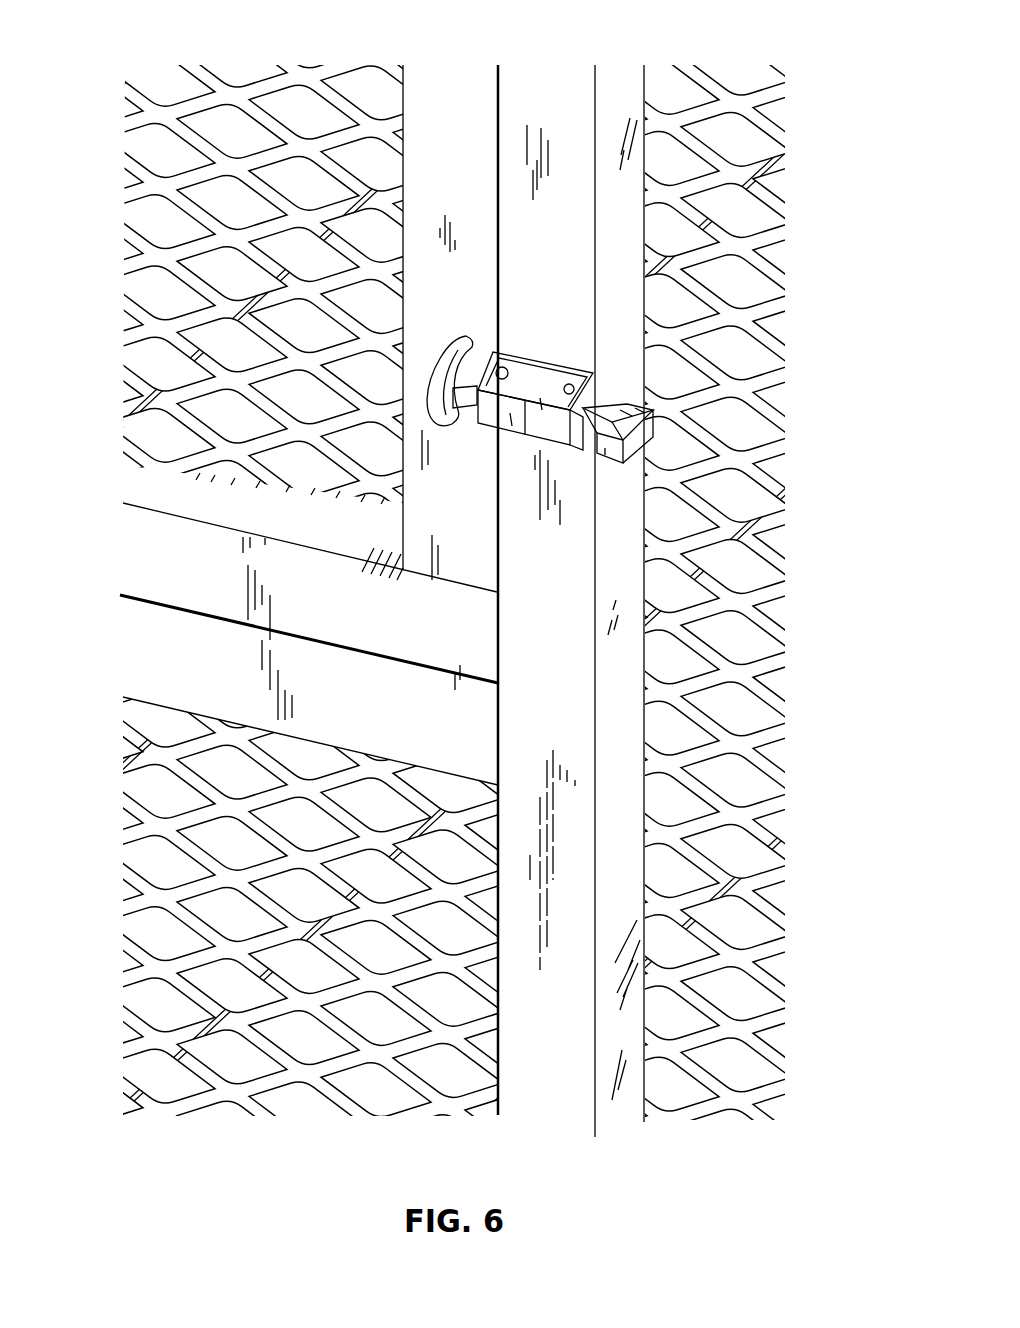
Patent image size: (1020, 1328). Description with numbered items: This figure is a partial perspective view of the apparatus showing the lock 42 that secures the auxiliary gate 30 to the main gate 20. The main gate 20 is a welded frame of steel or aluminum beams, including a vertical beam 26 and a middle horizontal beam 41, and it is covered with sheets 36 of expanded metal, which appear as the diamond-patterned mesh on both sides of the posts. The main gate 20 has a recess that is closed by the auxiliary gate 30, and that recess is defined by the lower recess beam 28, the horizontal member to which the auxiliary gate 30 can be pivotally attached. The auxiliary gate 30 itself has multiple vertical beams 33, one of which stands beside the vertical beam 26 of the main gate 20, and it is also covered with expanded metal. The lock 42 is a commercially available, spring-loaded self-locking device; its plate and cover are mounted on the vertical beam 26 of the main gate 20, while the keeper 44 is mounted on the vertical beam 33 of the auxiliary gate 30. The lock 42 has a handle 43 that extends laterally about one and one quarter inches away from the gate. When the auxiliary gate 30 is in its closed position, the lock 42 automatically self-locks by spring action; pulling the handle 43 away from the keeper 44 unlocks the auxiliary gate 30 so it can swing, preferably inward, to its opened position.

The main gate 20 is at (742, 170).
The vertical beam 26 is at (575, 675).
The lower recess beam 28 is at (147, 557).
The auxiliary gate 30 is at (163, 263).
The vertical beam 33 is at (437, 100).
The sheet of expanded metal 36 is at (740, 962).
The middle horizontal beam 41 is at (148, 643).
The lock 42 is at (580, 367).
The handle 43 is at (700, 440).
The keeper 44 is at (435, 360).